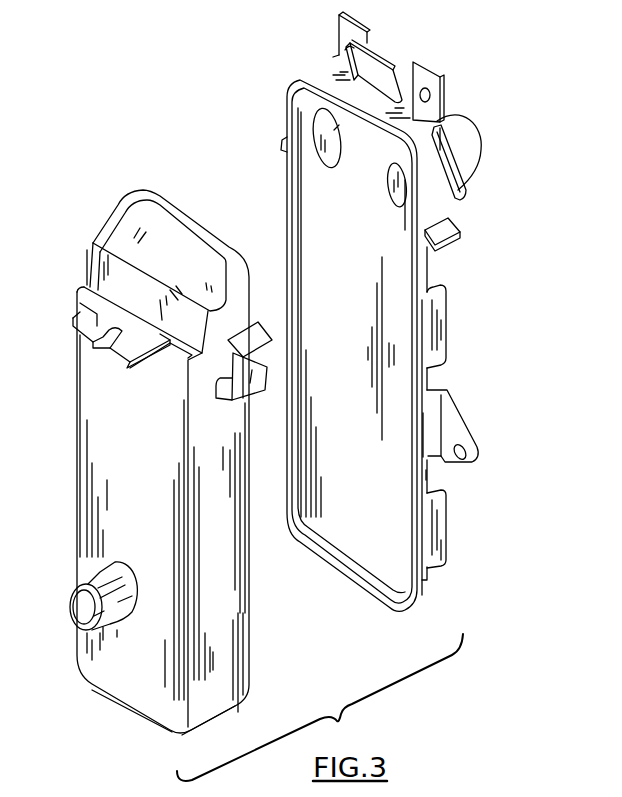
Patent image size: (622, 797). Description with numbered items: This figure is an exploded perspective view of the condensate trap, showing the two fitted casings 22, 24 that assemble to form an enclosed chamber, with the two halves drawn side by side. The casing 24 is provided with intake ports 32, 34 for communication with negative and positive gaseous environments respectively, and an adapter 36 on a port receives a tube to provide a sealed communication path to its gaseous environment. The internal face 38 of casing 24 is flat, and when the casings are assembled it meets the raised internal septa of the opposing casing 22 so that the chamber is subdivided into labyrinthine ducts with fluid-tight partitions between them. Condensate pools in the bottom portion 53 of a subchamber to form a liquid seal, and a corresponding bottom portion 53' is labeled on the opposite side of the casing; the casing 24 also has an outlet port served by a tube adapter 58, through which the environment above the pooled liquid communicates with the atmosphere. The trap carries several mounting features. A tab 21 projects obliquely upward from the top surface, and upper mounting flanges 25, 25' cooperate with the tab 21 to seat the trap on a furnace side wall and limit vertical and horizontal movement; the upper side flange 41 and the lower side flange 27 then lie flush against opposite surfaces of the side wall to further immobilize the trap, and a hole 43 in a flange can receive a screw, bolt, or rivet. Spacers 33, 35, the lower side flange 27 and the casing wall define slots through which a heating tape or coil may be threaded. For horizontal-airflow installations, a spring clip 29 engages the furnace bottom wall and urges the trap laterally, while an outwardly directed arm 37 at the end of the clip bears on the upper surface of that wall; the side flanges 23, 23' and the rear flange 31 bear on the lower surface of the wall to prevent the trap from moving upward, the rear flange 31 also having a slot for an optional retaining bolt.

The tab 21 is at (388, 65).
The casing 22 is at (68, 530).
The side flange 23 is at (469, 239).
The side flange 23' is at (257, 129).
The casing 24 is at (371, 305).
The upper mounting flange 25 is at (456, 72).
The upper mounting flange 25' is at (379, 28).
The lower side flange 27 is at (467, 435).
The spring clip 29 is at (250, 383).
The rear flange 31 is at (97, 325).
The intake port 32 is at (322, 125).
The spacer 33 is at (434, 532).
The intake port 34 is at (405, 195).
The spacer 35 is at (440, 337).
The adapter 36 is at (465, 125).
The outwardly directed arm 37 is at (255, 334).
The internal face 38 is at (404, 386).
The upper side flange 41 is at (463, 190).
The hole 43 is at (463, 462).
The bottom portion 53 is at (460, 76).
The hole 53' is at (303, 53).
The tube adapter 58 is at (112, 568).